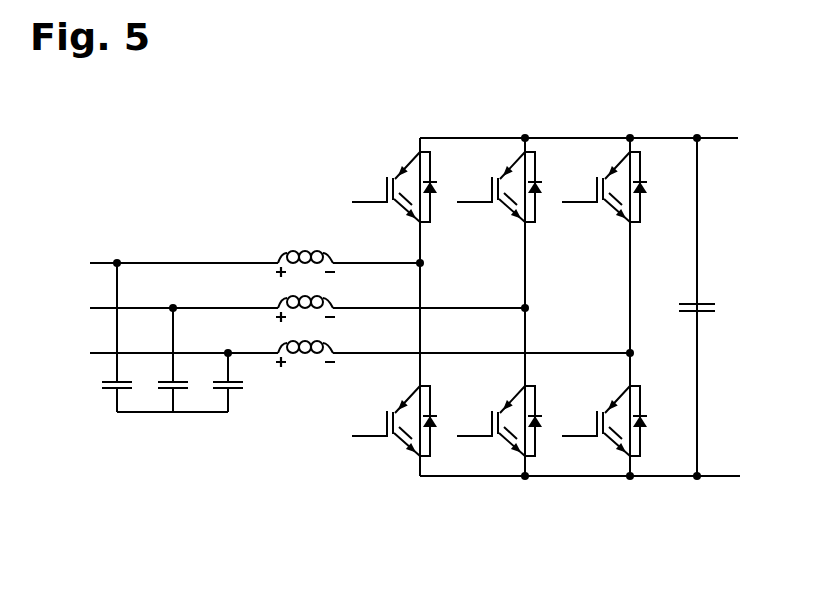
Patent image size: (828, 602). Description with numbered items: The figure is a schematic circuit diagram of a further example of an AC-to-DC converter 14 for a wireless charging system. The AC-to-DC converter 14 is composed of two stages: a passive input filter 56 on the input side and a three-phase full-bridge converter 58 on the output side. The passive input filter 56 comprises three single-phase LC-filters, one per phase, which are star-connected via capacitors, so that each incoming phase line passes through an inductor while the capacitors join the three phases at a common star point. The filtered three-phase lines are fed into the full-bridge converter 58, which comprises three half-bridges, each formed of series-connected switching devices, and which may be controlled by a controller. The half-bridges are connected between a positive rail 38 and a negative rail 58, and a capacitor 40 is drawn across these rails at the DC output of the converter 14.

The AC-to-DC converter 14 is at (286, 175).
The positive DC rail 38 is at (721, 117).
The intermediate circuit capacitor 40 is at (705, 314).
The passive input filter 56 is at (168, 496).
The three-phase full-bridge converter 58 is at (671, 497).